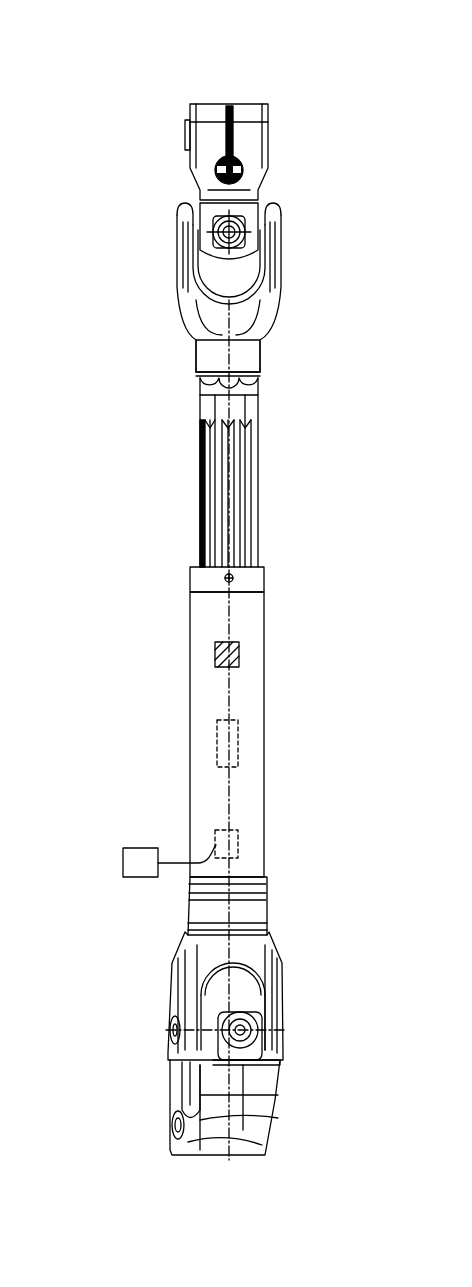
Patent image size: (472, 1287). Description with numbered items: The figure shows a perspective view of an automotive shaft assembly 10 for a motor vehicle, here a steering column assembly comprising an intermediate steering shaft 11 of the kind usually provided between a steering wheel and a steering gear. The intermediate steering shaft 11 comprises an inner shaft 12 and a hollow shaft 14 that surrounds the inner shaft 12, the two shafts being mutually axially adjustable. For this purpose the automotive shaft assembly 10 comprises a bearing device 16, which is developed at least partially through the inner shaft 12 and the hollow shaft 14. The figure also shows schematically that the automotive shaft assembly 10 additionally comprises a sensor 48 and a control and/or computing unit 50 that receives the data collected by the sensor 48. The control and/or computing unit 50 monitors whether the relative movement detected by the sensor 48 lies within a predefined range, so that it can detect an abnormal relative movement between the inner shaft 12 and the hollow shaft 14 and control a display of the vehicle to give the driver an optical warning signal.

The automotive shaft assembly 10 is at (131, 128).
The intermediate steering shaft 11 is at (282, 344).
The inner shaft 12 is at (208, 357).
The hollow shaft 14 is at (205, 790).
The bearing device 16 is at (174, 564).
The sensor 48 is at (237, 845).
The control and/or computing unit 50 is at (140, 868).